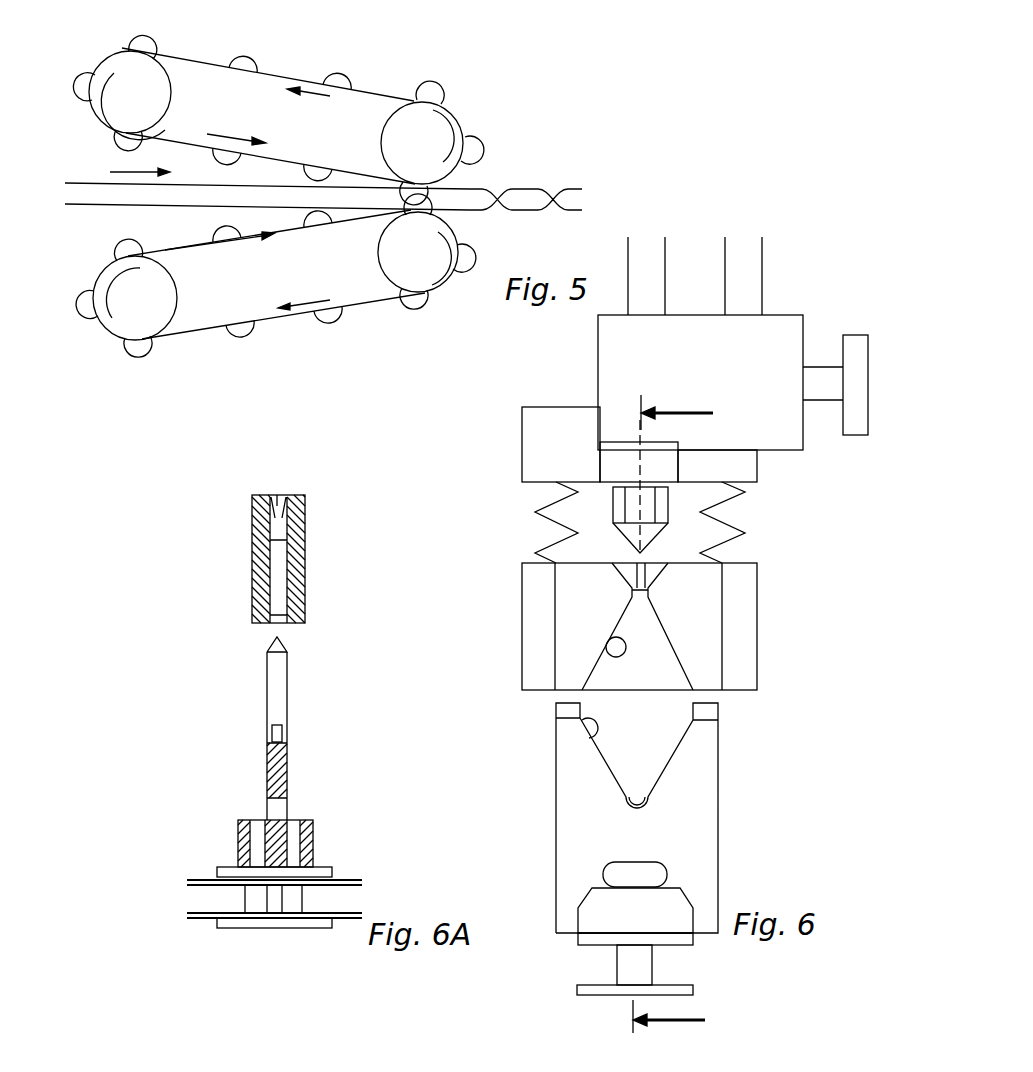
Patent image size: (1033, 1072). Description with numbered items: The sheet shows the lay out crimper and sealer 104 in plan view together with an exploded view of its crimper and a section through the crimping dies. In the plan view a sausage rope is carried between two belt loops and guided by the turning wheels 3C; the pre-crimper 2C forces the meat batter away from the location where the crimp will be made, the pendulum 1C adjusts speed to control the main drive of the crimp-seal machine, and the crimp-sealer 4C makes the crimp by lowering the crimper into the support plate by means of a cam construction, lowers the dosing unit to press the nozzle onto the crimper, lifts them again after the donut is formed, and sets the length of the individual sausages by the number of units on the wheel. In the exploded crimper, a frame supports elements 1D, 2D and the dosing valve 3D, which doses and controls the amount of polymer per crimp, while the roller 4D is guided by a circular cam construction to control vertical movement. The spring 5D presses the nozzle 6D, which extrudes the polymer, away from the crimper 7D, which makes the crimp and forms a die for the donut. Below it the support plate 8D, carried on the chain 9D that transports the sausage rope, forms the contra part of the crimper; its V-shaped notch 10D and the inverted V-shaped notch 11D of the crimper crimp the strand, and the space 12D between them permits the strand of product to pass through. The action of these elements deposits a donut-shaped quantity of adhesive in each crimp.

In FIG. 5, the pendulum 1C is at (92, 206).
In FIG. 5, the pre-crimper 2C is at (406, 88).
In FIG. 5, the turning wheel 3C is at (436, 98).
In FIG. 5, the crimp-sealer 4C is at (336, 72).
In FIG. 5, the lay out crimper and sealer 104 is at (412, 62).
In FIG. 6, the crimper element 1D is at (655, 263).
In FIG. 6, the crimper element 2D is at (742, 282).
In FIG. 6, the dosing valve 3D is at (605, 373).
In FIG. 6, the roller 4D is at (850, 342).
In FIG. 6, the spring 5D is at (536, 508).
In FIG. 6, the nozzle 6D is at (620, 500).
In FIG. 6, the crimper 7D is at (530, 605).
In FIG. 6A, the crimper 7D is at (307, 546).
In FIG. 6, the support plate 8D is at (566, 752).
In FIG. 6A, the support plate 8D is at (279, 751).
In FIG. 6, the chain 9D is at (627, 970).
In FIG. 6A, the chain 9D is at (215, 878).
In FIG. 6, the V-shaped notch 10D is at (582, 720).
In FIG. 6A, the V-shaped notch 10D is at (281, 702).
In FIG. 6, the V-shaped notch 11D is at (610, 646).
In FIG. 6, the space 12D is at (600, 707).